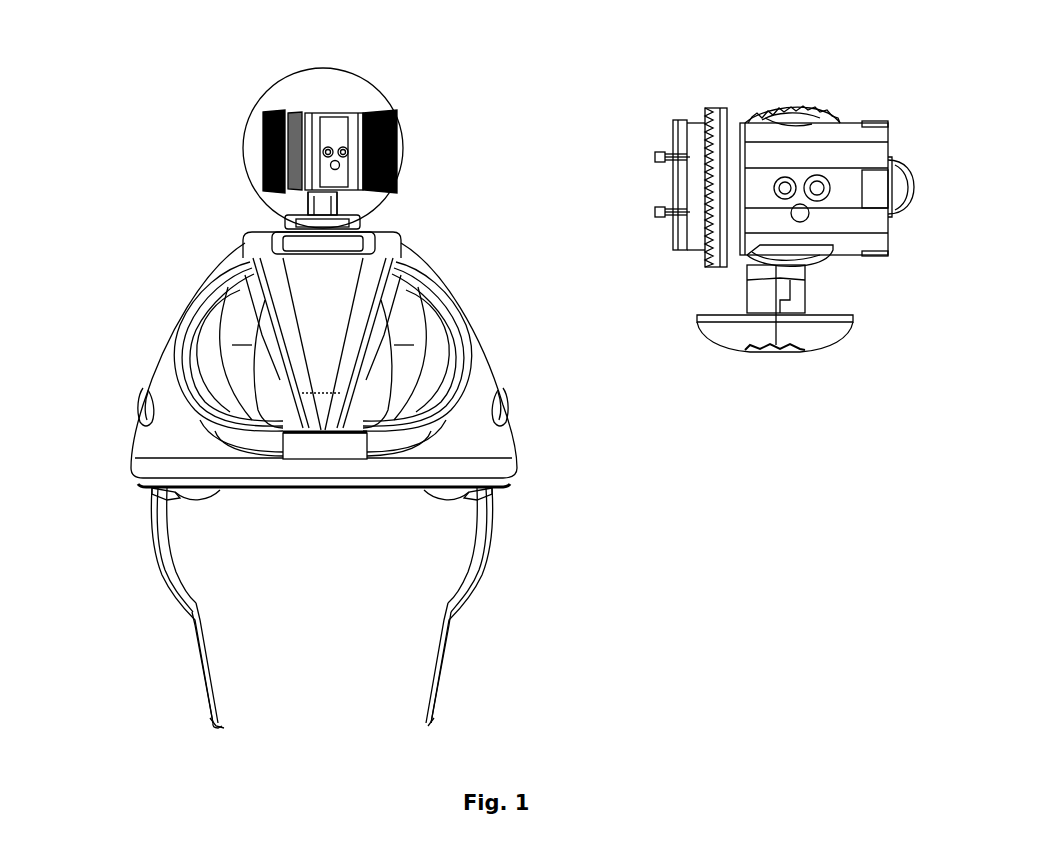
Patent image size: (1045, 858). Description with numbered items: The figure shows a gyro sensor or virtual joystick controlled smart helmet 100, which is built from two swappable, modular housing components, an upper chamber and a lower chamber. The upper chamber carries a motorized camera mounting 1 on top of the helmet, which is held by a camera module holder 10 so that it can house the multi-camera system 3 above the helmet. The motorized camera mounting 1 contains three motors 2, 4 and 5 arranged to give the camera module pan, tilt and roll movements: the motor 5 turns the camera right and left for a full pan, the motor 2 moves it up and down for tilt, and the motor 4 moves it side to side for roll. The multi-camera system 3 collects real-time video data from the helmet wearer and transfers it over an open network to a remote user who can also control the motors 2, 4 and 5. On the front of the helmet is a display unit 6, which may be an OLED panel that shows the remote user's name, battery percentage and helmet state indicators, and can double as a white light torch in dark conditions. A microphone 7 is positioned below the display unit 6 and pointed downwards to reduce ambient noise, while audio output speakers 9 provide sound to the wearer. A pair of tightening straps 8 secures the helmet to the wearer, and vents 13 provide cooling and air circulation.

The gyro sensor or virtual joystick controlled smart helmet 100 is at (497, 358).
The motorized camera mounting 1 is at (268, 110).
The multi-camera system 3 is at (340, 148).
The camera module holder 10 is at (262, 232).
The motor 2 is at (693, 133).
The motor 4 is at (783, 127).
The motor 5 is at (830, 340).
The vents for cooling and air circulation 13 is at (213, 383).
The display unit 6 is at (267, 449).
The microphone (MIC) 7 is at (217, 491).
The audio output/speakers 9 is at (478, 500).
The pair of tightening straps 8 is at (218, 728).